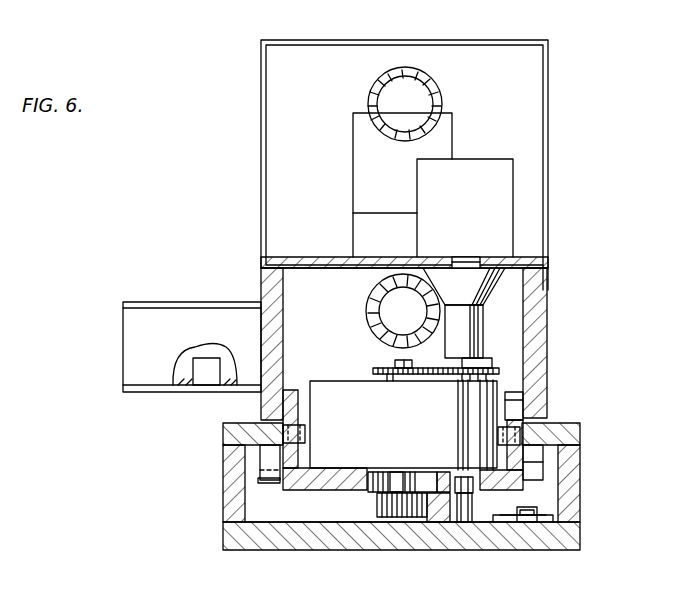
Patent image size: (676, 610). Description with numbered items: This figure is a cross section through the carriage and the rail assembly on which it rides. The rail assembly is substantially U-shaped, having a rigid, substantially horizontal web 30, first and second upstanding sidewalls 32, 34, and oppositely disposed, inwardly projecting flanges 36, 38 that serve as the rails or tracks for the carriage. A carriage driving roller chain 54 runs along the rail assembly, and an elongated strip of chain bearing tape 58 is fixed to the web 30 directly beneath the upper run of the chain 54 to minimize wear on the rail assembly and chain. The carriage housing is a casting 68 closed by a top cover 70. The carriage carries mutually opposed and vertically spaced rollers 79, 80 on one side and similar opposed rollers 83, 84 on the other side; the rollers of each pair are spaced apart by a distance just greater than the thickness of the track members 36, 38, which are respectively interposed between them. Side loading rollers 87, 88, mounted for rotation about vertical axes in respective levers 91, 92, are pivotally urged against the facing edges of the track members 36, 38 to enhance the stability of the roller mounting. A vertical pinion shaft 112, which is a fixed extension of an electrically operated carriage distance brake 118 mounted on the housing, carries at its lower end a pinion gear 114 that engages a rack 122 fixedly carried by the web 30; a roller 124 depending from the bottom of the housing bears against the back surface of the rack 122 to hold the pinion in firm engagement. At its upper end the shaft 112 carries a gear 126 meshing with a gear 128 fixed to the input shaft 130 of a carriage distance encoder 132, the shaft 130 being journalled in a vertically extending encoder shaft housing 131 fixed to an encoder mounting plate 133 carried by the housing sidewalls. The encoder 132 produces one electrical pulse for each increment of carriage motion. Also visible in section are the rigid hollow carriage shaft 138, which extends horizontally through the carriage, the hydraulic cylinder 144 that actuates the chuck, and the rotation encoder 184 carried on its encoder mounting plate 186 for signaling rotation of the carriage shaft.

The web 30 is at (272, 547).
The first upstanding sidewall 32 is at (222, 484).
The second upstanding sidewall 34 is at (565, 505).
The flange 36 is at (222, 440).
The flange 38 is at (560, 425).
The carriage driving roller chain 54 is at (513, 515).
The chain bearing tape 58 is at (555, 518).
The casting 68 is at (263, 290).
The top cover 70 is at (418, 40).
The roller 79 is at (545, 404).
The roller 80 is at (545, 470).
The roller 83 is at (258, 404).
The roller 84 is at (265, 484).
The side loading roller 87 is at (305, 436).
The side loading roller 88 is at (497, 437).
The lever 91 is at (500, 428).
The lever 92 is at (300, 425).
The pinion shaft 112 is at (400, 472).
The pinion gear 114 is at (377, 505).
The carriage distance brake 118 is at (350, 382).
The rack 122 is at (437, 525).
The roller 124 is at (464, 522).
The gear 126 is at (385, 366).
The gear 128 is at (500, 371).
The input shaft 130 is at (505, 360).
The encoder shaft housing 131 is at (498, 290).
The carriage distance encoder 132 is at (470, 160).
The encoder mounting plate 133 is at (535, 262).
The carriage shaft 138 is at (367, 310).
The hydraulic cylinder 144 is at (438, 90).
The rotation encoder 184 is at (353, 144).
The encoder mounting plate 186 is at (353, 227).